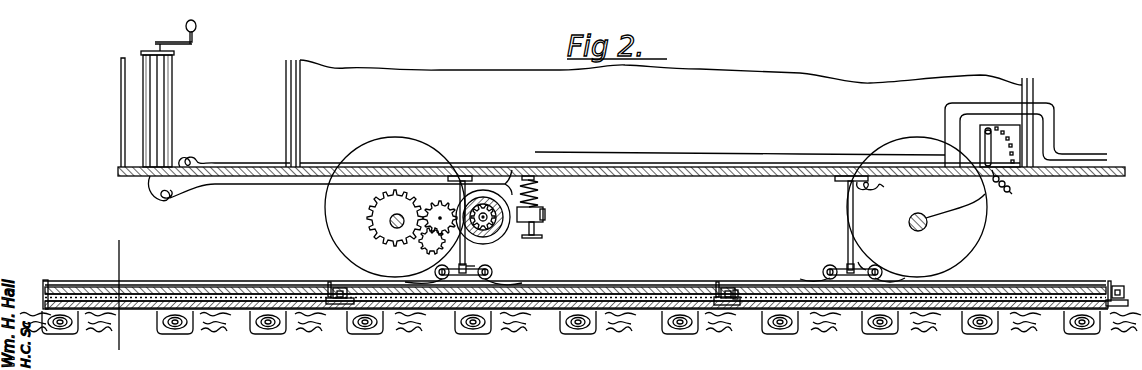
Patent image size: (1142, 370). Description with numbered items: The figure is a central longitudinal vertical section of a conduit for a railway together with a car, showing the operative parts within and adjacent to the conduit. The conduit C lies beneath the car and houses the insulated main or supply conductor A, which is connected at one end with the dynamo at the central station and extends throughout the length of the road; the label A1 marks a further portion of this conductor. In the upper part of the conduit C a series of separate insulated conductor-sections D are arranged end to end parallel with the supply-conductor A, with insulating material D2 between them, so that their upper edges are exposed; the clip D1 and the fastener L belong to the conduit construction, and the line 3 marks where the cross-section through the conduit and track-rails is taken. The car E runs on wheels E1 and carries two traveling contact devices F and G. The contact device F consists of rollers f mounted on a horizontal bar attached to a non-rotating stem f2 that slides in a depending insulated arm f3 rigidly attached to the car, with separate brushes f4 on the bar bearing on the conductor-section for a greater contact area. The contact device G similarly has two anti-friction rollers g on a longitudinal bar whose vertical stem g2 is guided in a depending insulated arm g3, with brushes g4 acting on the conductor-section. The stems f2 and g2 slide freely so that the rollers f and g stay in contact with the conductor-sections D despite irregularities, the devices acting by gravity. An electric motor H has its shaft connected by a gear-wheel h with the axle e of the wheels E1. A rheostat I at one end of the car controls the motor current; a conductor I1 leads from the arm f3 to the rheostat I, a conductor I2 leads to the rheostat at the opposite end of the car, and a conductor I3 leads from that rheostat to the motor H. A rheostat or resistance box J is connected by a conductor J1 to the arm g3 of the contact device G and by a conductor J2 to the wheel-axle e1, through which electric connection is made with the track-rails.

The road bed section line A1 is at (272, 11).
The insulated main or supply conductor A is at (565, 8).
The rheostat I is at (155, 118).
The conductor I1 is at (278, 185).
The conductor I2 is at (468, 167).
The conductor I3 is at (676, 168).
The car E is at (696, 113).
The wheels E1 is at (656, 207).
The gear-wheel h is at (412, 222).
The axle e is at (390, 222).
The electric motor H is at (506, 233).
The traveling contact device F is at (480, 266).
The rollers f is at (436, 270).
The non-rotating stem f2 is at (421, 277).
The depending insulated arm f3 is at (470, 260).
The brushes f4 is at (507, 274).
The conduit C is at (574, 273).
The insulated conductor-sections D is at (280, 291).
The conduit clip D1 is at (735, 288).
The insulating material D2 is at (721, 286).
The rail fastener L is at (336, 283).
The traveling contact device G is at (846, 251).
The anti-friction wheels or rollers g is at (823, 267).
The vertical stem g2 is at (858, 262).
The depending insulated arm g3 is at (848, 223).
The brushes g4 is at (894, 273).
The wheel-axle e1 is at (908, 222).
The rheostat or resistance box J is at (1000, 146).
The conductor J1 is at (925, 177).
The conductor J2 is at (985, 194).
The section line 3 is at (118, 295).